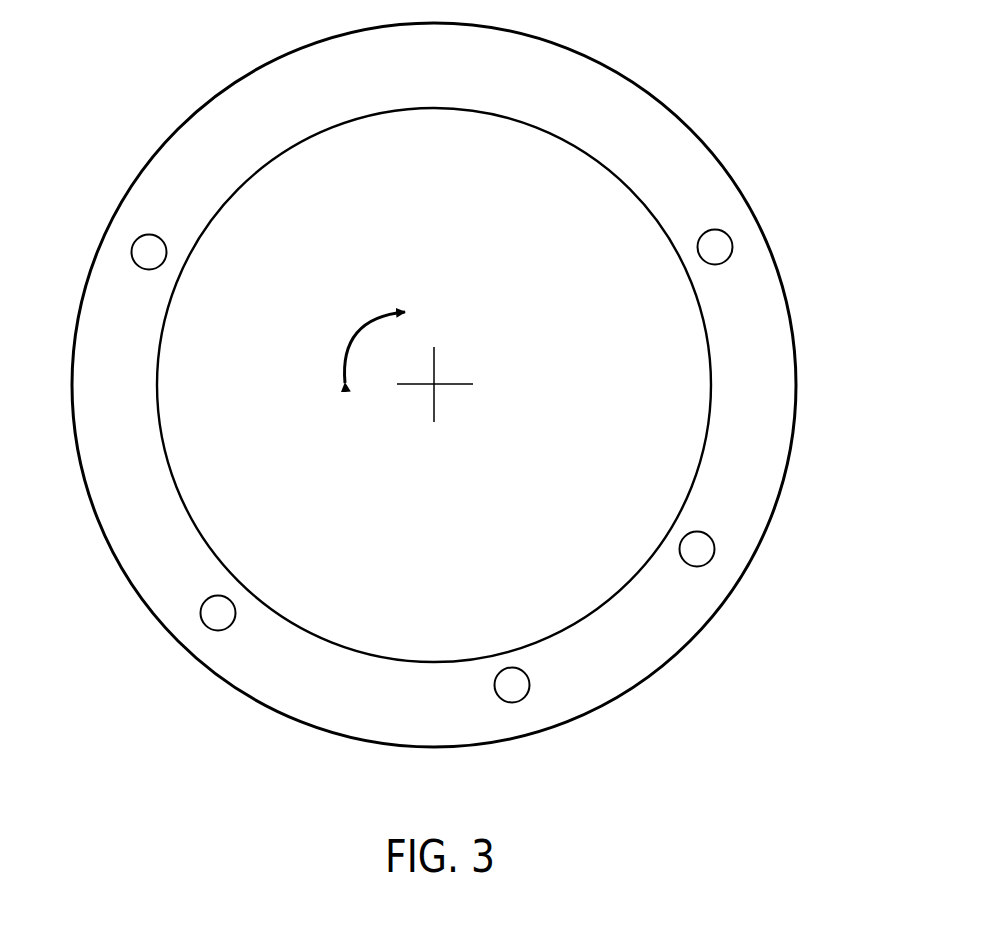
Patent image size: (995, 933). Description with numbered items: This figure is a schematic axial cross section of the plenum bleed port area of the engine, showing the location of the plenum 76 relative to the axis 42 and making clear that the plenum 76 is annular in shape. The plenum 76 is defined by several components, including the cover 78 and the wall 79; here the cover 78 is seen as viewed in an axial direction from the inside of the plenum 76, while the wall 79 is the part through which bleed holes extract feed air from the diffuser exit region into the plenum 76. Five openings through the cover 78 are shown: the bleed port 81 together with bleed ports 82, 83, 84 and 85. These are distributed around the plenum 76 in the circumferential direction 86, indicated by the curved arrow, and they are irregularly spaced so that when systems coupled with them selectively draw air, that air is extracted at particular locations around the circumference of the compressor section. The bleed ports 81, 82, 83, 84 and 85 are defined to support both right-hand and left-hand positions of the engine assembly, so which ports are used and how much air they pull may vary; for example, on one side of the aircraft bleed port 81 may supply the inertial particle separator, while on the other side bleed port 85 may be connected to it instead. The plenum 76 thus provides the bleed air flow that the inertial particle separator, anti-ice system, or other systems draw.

The plenum 76 is at (630, 98).
The cover 78 is at (690, 162).
The wall 79 is at (757, 392).
The bleed port 81 is at (733, 243).
The bleed port 82 is at (715, 553).
The bleed port 83 is at (530, 687).
The bleed port 84 is at (200, 612).
The bleed port 85 is at (130, 248).
The circumferential direction 86 is at (358, 333).
The axis 42 is at (434, 384).